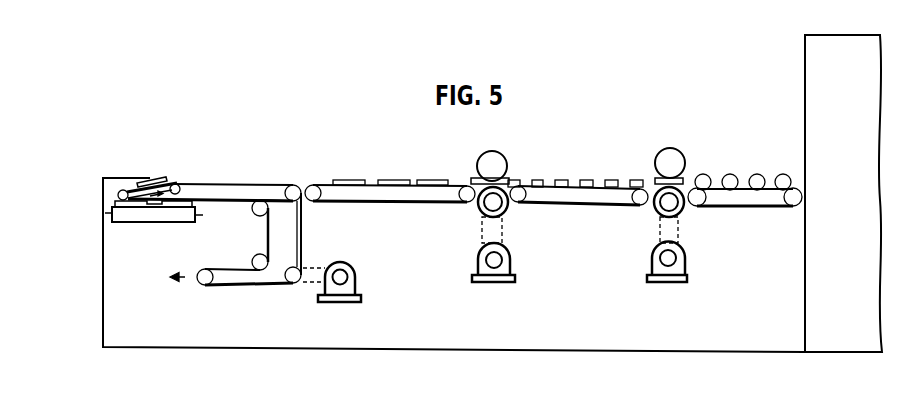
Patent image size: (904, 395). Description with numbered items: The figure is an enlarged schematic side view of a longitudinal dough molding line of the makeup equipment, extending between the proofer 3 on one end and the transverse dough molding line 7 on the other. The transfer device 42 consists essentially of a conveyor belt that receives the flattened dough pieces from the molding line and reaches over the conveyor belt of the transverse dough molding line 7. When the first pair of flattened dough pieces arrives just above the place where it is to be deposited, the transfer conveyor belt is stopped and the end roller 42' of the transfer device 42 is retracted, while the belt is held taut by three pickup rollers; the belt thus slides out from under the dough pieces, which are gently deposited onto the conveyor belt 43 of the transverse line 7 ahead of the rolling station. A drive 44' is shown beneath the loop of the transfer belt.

The proofer 3 is at (807, 114).
The transfer device 42 is at (214, 174).
The end roller 42' is at (123, 174).
The conveyor belt 43 is at (272, 184).
The transverse dough molding line 7 is at (128, 213).
The drive motor 44' is at (357, 282).